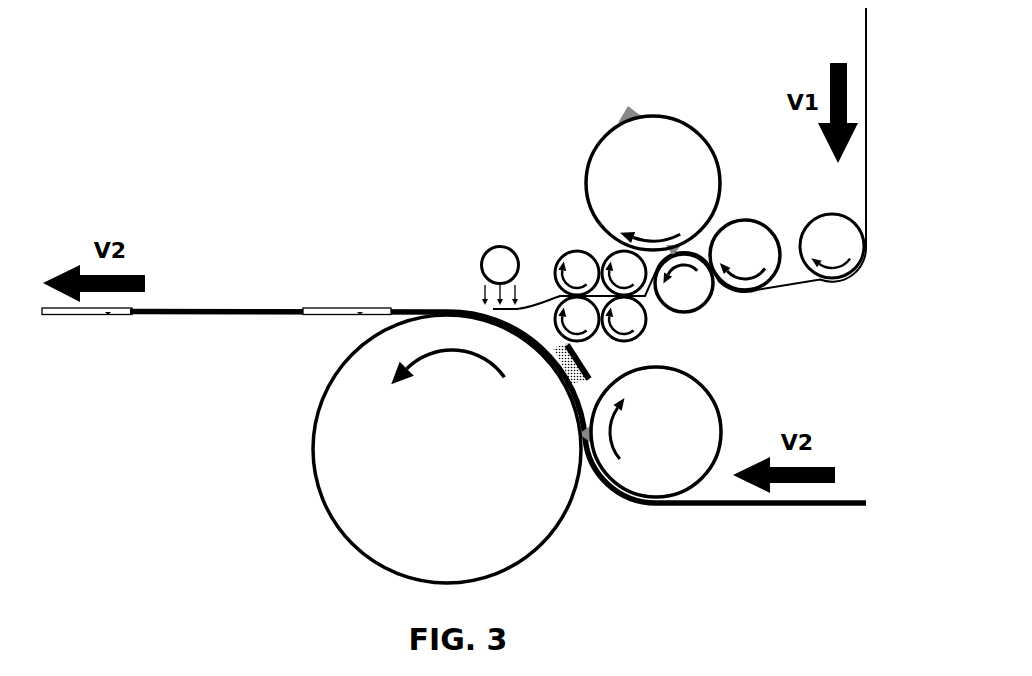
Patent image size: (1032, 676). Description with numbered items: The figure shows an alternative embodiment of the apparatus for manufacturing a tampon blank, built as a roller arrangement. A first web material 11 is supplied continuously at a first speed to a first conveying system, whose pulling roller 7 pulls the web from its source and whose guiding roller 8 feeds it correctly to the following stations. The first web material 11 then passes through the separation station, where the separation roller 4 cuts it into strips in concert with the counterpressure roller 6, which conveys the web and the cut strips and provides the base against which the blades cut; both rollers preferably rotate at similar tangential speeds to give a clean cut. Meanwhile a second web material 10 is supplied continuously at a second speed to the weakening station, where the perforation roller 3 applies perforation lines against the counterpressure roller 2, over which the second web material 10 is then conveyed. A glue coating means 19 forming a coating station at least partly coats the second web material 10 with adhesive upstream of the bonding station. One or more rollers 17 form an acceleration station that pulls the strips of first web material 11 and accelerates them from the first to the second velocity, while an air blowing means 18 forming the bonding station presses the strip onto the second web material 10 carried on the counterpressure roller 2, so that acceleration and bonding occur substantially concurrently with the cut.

The counterpressure roller 2 is at (447, 449).
The perforation roller 3 is at (656, 432).
The separation roller 4 is at (653, 183).
The counterpressure roller 6 is at (684, 283).
The pulling roller 7 is at (745, 255).
The guiding roller 8 is at (832, 246).
The second web material 10 is at (454, 425).
The first web material 11 is at (699, 158).
The rollers 17 is at (600, 296).
The air blowing means 18 is at (500, 276).
The glue coating means 19 is at (588, 357).